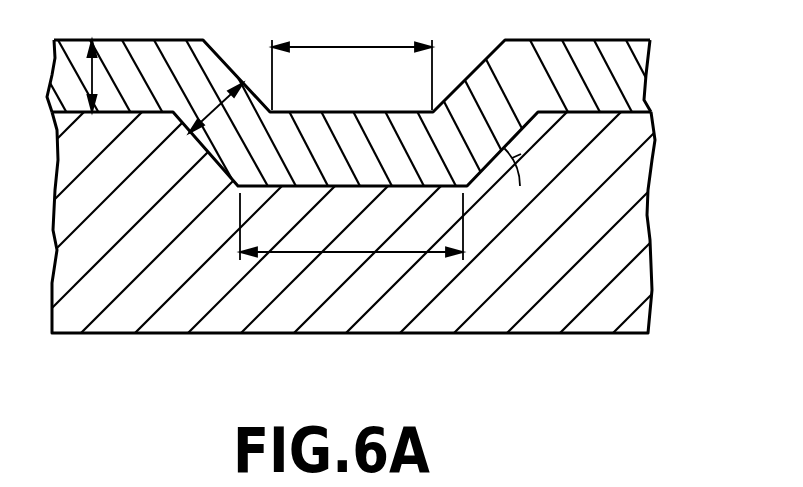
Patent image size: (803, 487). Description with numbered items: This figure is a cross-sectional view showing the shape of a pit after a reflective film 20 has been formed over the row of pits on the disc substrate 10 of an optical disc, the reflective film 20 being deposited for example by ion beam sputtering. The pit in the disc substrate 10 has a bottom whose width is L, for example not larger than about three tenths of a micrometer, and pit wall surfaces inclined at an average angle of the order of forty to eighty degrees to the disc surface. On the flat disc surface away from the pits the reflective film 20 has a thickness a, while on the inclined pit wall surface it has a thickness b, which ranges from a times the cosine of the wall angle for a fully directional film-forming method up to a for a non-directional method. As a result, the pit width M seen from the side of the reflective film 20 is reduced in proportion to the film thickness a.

The disc substrate 10 is at (628, 219).
The reflective film 20 is at (636, 75).
The pit width M is at (352, 59).
The thickness of the reflective film a is at (109, 76).
The thickness of the reflective film on the pit wall surface b is at (219, 112).
The width of the pit bottom L is at (351, 226).